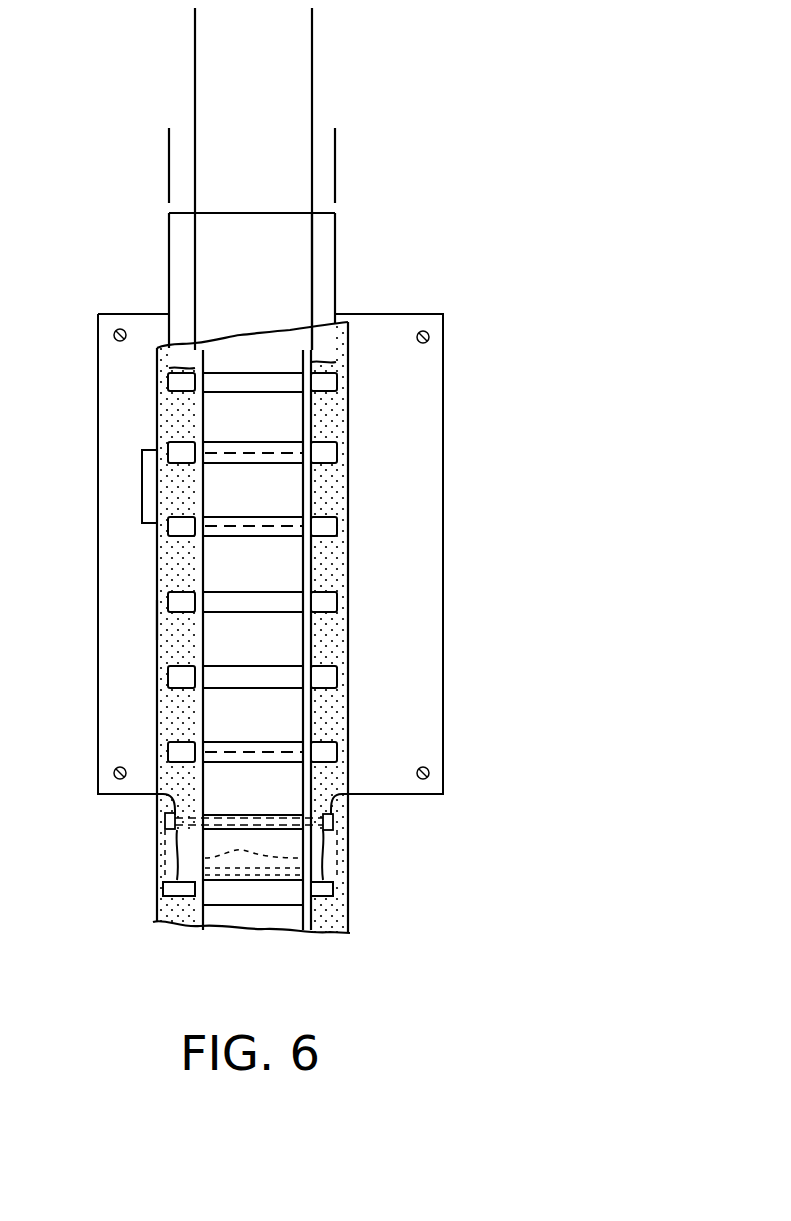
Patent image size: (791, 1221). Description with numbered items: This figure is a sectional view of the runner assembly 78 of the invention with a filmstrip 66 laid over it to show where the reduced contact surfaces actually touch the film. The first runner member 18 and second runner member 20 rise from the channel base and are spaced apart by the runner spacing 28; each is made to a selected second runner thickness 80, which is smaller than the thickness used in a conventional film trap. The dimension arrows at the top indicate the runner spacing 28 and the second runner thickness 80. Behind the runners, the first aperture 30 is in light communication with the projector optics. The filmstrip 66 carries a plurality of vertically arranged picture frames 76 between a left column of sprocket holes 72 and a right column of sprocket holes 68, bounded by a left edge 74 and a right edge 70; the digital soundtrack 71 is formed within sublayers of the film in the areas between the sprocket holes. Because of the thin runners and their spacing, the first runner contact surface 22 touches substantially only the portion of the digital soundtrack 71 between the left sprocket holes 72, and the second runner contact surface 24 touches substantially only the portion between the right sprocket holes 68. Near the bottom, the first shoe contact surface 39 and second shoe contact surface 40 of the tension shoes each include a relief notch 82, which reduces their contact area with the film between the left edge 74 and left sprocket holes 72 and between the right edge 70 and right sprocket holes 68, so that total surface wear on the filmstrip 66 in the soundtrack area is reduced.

The first runner member 18 is at (138, 260).
The second runner member 20 is at (372, 269).
The first runner contact surface 22 is at (177, 301).
The second runner contact surface 24 is at (330, 306).
The runner spacing 28 is at (195, 35).
The first aperture 30 is at (143, 505).
The first shoe contact surface 39 is at (155, 818).
The second shoe contact surface 40 is at (340, 820).
The filmstrip 66 is at (288, 563).
The right column of sprocket holes 68 is at (327, 939).
The right edge 70 is at (348, 482).
The digital soundtrack 71 is at (157, 402).
The left column of sprocket holes 72 is at (172, 927).
The left edge 74 is at (157, 619).
The picture frames 76 is at (247, 922).
The runner assembly 78 is at (482, 308).
The second runner thickness 80 is at (230, 157).
The relief notch 82 is at (150, 858).